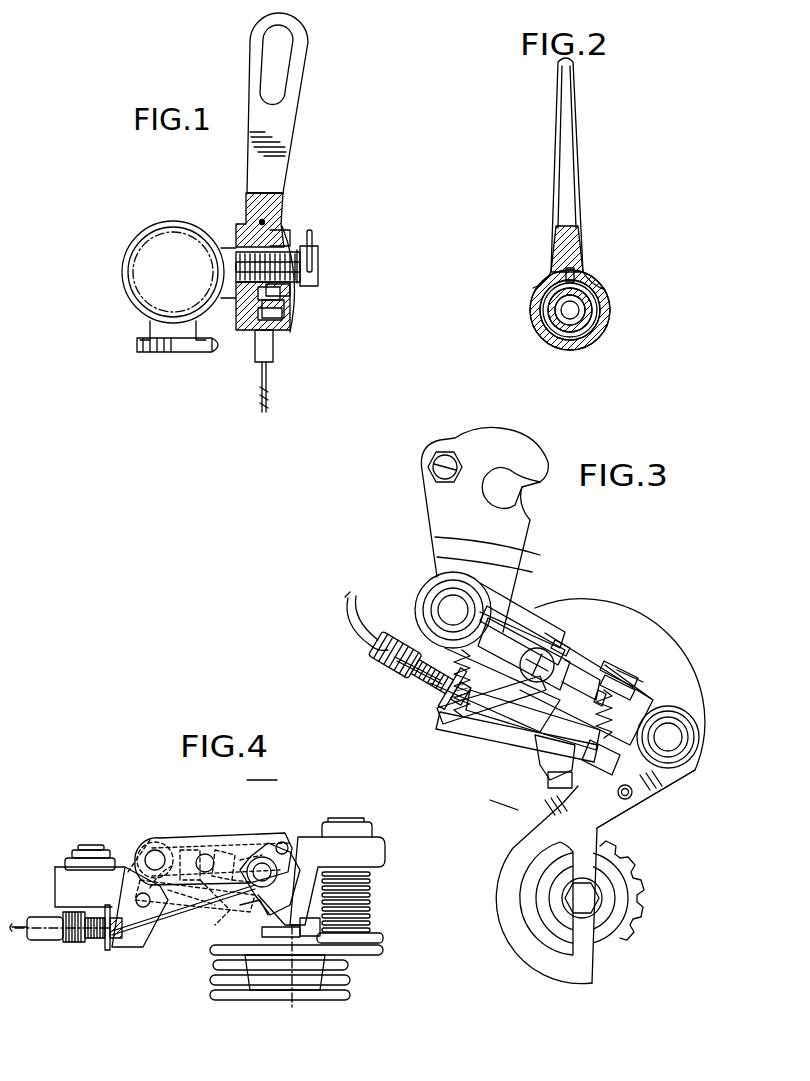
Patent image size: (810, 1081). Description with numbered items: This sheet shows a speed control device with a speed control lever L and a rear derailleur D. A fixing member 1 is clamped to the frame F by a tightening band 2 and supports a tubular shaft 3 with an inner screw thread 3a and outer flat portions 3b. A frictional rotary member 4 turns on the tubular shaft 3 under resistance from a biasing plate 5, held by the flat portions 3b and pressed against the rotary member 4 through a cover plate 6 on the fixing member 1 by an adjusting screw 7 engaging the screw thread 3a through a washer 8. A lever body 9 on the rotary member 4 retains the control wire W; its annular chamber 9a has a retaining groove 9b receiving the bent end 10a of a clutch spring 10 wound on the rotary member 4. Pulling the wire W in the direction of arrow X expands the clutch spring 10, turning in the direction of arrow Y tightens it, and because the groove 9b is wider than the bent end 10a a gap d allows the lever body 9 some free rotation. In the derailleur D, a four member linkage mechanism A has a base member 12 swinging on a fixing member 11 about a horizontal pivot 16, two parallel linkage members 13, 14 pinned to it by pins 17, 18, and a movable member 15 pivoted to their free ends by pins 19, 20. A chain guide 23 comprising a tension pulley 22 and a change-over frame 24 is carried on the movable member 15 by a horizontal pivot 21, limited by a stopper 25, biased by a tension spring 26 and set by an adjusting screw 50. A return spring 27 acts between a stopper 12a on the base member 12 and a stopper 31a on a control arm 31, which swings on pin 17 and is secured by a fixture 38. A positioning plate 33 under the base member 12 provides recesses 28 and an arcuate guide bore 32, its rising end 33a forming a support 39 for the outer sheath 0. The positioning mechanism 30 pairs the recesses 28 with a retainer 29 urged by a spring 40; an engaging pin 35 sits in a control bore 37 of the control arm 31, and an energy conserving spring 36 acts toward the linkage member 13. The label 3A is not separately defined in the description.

In FIG. 1, the fixing member 1 is at (242, 213).
In FIG. 1, the tightening band 2 is at (182, 222).
In FIG. 1, the tubular shaft 3 is at (227, 217).
In FIG. 2, the tubular shaft 3 is at (552, 333).
In FIG. 1, the screw thread 3a is at (232, 268).
In FIG. 2, the flat portions 3b is at (543, 313).
In FIG. 1, the frictional rotary member 4 is at (312, 243).
In FIG. 2, the frictional rotary member 4 is at (588, 310).
In FIG. 1, the biasing plate 5 is at (288, 310).
In FIG. 1, the cover plate 6 is at (297, 300).
In FIG. 1, the adjusting screw 7 is at (318, 272).
In FIG. 1, the washer 8 is at (315, 283).
In FIG. 1, the lever body 9 is at (296, 117).
In FIG. 2, the lever body 9 is at (572, 162).
In FIG. 1, the annular chamber 9a is at (250, 320).
In FIG. 1, the retaining groove 9b is at (290, 228).
In FIG. 2, the retaining groove 9b is at (577, 275).
In FIG. 1, the clutch spring 10 is at (297, 242).
In FIG. 2, the clutch spring 10 is at (608, 285).
In FIG. 1, the bent end 10a is at (284, 218).
In FIG. 2, the bent end 10a is at (567, 280).
In FIG. 1, the frame F is at (148, 237).
In FIG. 1, the speed control lever L is at (307, 153).
In FIG. 2, the speed control lever L is at (587, 203).
In FIG. 1, the control wire W is at (287, 204).
In FIG. 3, the control wire W is at (440, 698).
In FIG. 4, the control wire W is at (165, 905).
In FIG. 2, the arrow X direction X is at (543, 92).
In FIG. 2, the arrow Y direction Y is at (587, 92).
In FIG. 2, the gap d is at (580, 283).
In FIG. 3, the fixing member 11 is at (437, 505).
In FIG. 3, the base member 12 is at (428, 578).
In FIG. 4, the base member 12 is at (53, 877).
In FIG. 4, the stopper 12a is at (125, 860).
In FIG. 3, the linkage member 13 is at (555, 640).
In FIG. 4, the linkage member 13 is at (167, 827).
In FIG. 4, the linkage member 14 is at (247, 910).
In FIG. 3, the movable member 15 is at (667, 703).
In FIG. 4, the movable member 15 is at (382, 848).
In FIG. 3, the horizontal pivot 16 is at (440, 607).
In FIG. 4, the horizontal pivot 16 is at (72, 847).
In FIG. 3, the pin 17 is at (453, 728).
In FIG. 4, the pin 17 is at (148, 853).
In FIG. 4, the pin 18 is at (143, 910).
In FIG. 3, the pin 19 is at (598, 763).
In FIG. 4, the pin 19 is at (272, 858).
In FIG. 3, the pin 20 is at (630, 668).
In FIG. 4, the pin 20 is at (302, 992).
In FIG. 3, the horizontal pivot 21 is at (687, 737).
In FIG. 4, the horizontal pivot 21 is at (360, 940).
In FIG. 3, the tension pulley 22 is at (642, 887).
In FIG. 4, the tension pulley 22 is at (245, 985).
In FIG. 3, the chain guide 23 is at (620, 818).
In FIG. 4, the chain guide 23 is at (330, 990).
In FIG. 3, the change-over frame 24 is at (515, 847).
In FIG. 4, the change-over frame 24 is at (258, 990).
In FIG. 3, the stopper 25 is at (637, 792).
In FIG. 4, the stopper 25 is at (312, 930).
In FIG. 4, the tension spring 26 is at (373, 900).
In FIG. 3, the return spring 27 is at (445, 705).
In FIG. 4, the return spring 27 is at (155, 830).
In FIG. 3, the recesses 28 is at (553, 753).
In FIG. 4, the recesses 28 is at (236, 862).
In FIG. 3, the retainer 29 is at (530, 743).
In FIG. 4, the retainer 29 is at (256, 862).
In FIG. 3, the positioning mechanism 30 is at (500, 815).
In FIG. 4, the positioning mechanism 30 is at (263, 767).
In FIG. 3, the control arm 31 is at (483, 733).
In FIG. 4, the control arm 31 is at (272, 858).
In FIG. 4, the stopper 31a is at (153, 830).
In FIG. 4, the guide bore 32 is at (178, 918).
In FIG. 3, the positioning plate 33 is at (500, 740).
In FIG. 4, the positioning plate 33 is at (186, 918).
In FIG. 3, the rising end 33a is at (417, 692).
In FIG. 4, the rising end 33a is at (107, 947).
In FIG. 3, the engaging pin 35 is at (600, 650).
In FIG. 4, the engaging pin 35 is at (207, 853).
In FIG. 3, the energy conserving spring 36 is at (537, 610).
In FIG. 3, the control bore 37 is at (537, 665).
In FIG. 4, the control bore 37 is at (220, 858).
In FIG. 3, the fixture 38 is at (557, 783).
In FIG. 4, the fixture 38 is at (286, 850).
In FIG. 3, the support 39 is at (385, 668).
In FIG. 4, the support 39 is at (73, 942).
In FIG. 3, the spring 40 is at (620, 668).
In FIG. 3, the adjusting screw 50 is at (575, 650).
In FIG. 4, the adjusting screw 50 is at (185, 855).
In FIG. 3, the outer sheath 0 is at (367, 645).
In FIG. 4, the outer sheath 0 is at (43, 942).
In FIG. 3, the linkage mechanism A is at (510, 630).
In FIG. 4, the linkage mechanism A is at (157, 832).
In FIG. 3, the derailleur D is at (577, 560).
In FIG. 3, the spring end 3A is at (635, 672).